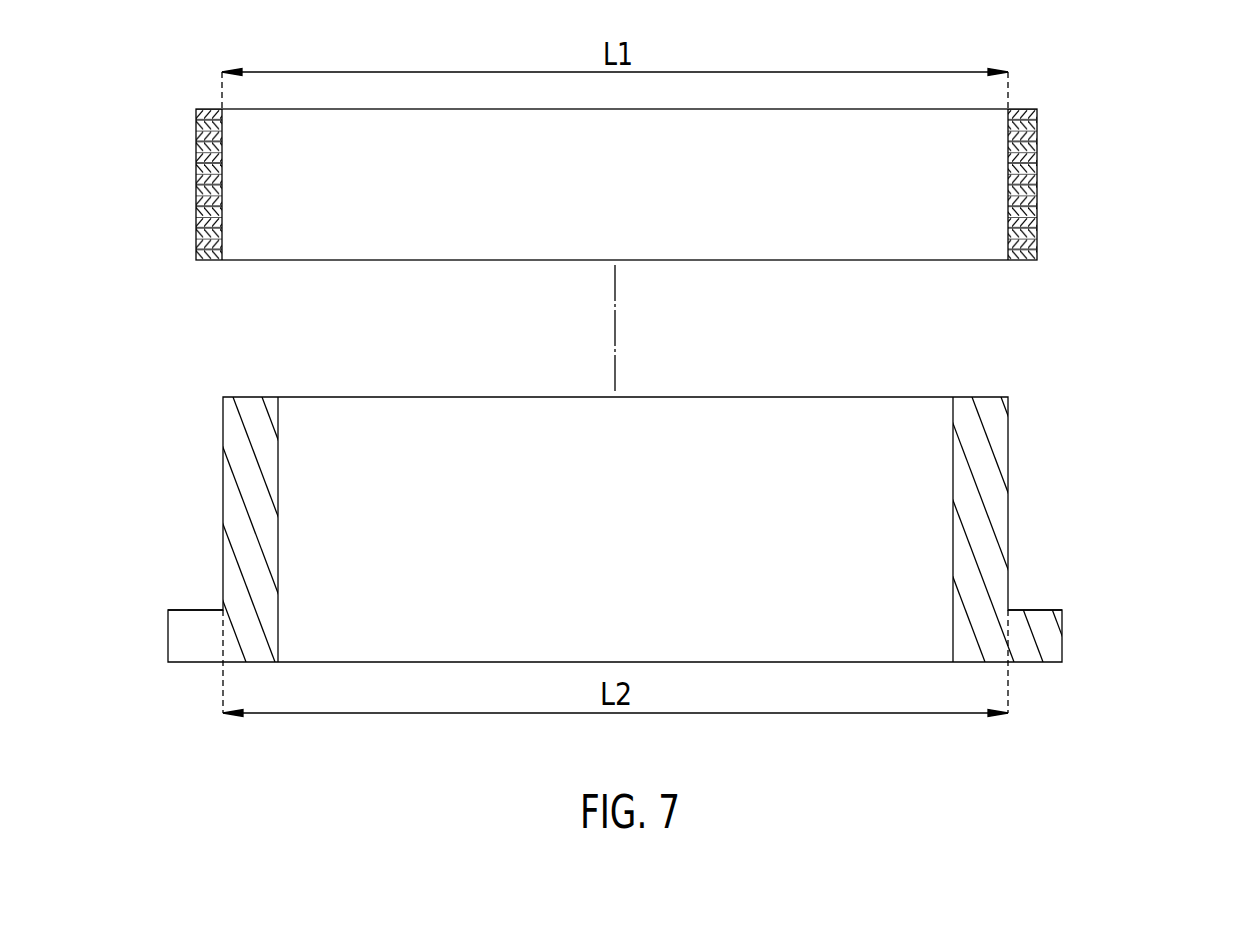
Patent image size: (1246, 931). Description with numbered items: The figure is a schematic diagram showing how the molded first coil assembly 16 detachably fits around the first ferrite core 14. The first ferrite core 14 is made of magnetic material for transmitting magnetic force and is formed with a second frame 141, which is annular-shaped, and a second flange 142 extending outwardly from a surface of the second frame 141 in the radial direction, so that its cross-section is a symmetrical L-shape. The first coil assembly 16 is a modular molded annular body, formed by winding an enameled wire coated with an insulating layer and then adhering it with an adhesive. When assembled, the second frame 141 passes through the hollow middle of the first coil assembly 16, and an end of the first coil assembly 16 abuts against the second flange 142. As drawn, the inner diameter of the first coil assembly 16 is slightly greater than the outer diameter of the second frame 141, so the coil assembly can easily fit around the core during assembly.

The first ferrite core 14 is at (689, 537).
The second frame 141 is at (998, 431).
The second flange 142 is at (675, 639).
The first coil assembly 16 is at (1037, 170).